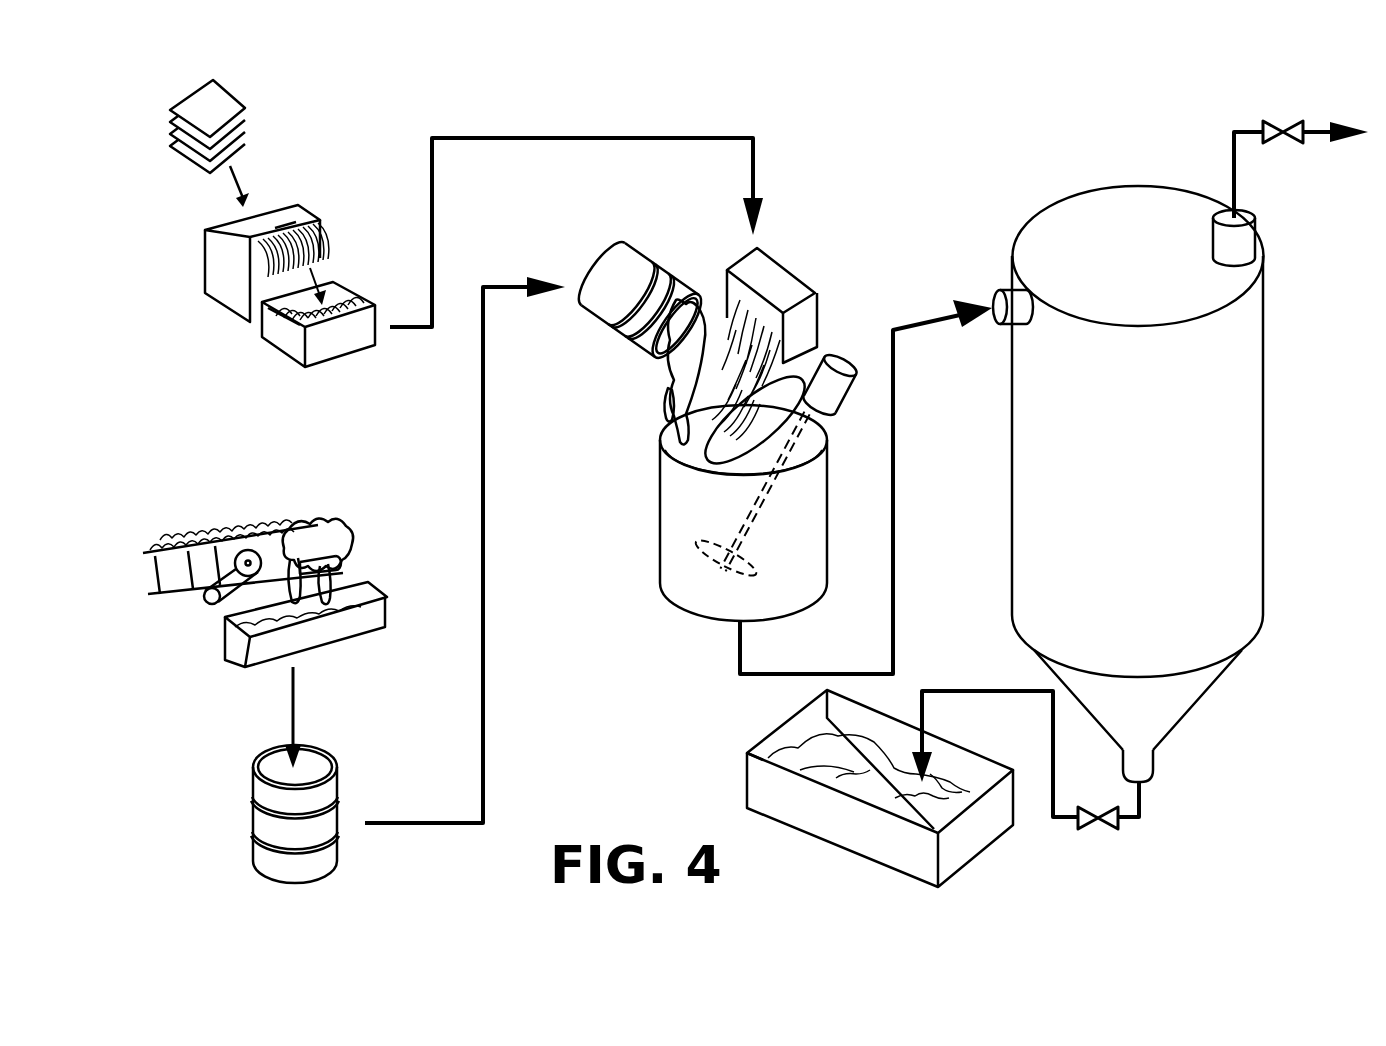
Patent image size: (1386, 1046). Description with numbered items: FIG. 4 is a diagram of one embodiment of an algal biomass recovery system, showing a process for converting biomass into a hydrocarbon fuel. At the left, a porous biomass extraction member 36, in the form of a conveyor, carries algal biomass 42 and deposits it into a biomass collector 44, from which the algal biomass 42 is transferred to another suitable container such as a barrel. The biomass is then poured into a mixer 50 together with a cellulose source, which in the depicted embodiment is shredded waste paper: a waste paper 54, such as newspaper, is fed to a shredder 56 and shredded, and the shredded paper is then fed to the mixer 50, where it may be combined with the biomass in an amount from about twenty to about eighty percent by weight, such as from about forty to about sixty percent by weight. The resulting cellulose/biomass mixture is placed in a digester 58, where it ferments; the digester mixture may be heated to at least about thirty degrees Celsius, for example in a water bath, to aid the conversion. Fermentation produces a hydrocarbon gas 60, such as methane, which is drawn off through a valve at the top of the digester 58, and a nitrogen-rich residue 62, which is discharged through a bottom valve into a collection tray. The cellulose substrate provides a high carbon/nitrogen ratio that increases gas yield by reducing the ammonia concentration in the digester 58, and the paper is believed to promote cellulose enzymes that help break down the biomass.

The biomass extraction member 36 is at (343, 537).
The algal biomass 42 is at (265, 522).
The biomass collector 44 is at (260, 662).
The mixer 50 is at (660, 487).
The waste paper 54 is at (250, 110).
The shredder 56 is at (278, 217).
The digester 58 is at (1262, 497).
The hydrocarbon gas 60 is at (1313, 138).
The nitrogen-rich residue 62 is at (957, 842).